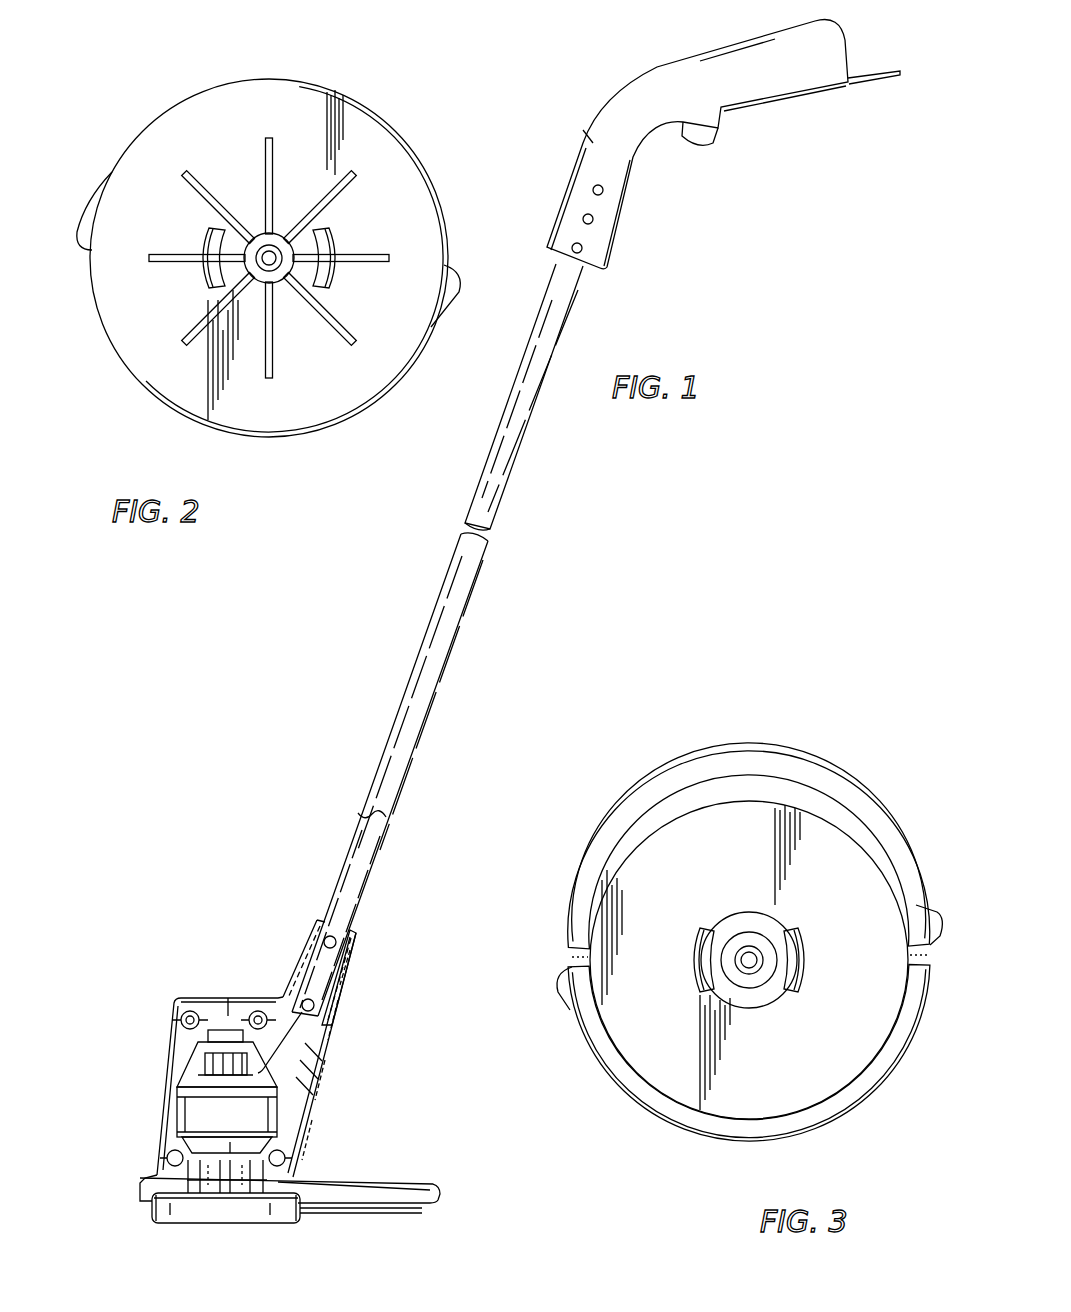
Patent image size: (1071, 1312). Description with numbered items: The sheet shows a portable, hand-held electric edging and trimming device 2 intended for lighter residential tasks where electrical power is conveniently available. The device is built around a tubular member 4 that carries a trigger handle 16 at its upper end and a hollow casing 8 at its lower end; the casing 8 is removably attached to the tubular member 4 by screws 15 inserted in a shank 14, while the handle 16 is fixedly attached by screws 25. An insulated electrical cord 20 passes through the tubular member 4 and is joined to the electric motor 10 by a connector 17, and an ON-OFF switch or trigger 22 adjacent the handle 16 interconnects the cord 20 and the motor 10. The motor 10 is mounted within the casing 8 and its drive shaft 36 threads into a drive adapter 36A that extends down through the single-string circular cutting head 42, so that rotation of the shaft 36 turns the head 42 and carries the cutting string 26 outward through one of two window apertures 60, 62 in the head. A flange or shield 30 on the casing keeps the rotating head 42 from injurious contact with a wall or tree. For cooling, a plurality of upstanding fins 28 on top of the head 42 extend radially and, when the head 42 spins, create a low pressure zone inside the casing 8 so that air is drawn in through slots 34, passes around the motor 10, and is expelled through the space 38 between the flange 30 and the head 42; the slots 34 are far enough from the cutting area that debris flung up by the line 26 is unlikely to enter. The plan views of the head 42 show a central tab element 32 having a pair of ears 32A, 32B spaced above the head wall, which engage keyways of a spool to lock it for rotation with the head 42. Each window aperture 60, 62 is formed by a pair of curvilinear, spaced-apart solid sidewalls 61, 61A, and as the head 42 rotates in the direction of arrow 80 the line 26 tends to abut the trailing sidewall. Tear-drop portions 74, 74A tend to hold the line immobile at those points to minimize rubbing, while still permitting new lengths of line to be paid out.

In FIG. 1, the edging and trimming device 2 is at (185, 918).
In FIG. 1, the tubular member 4 is at (427, 632).
In FIG. 1, the casing 8 is at (208, 998).
In FIG. 1, the electric motor 10 is at (185, 1110).
In FIG. 1, the shank 14 is at (303, 947).
In FIG. 1, the screws 15 is at (355, 937).
In FIG. 1, the trigger handle 16 is at (660, 66).
In FIG. 1, the connector 17 is at (293, 1033).
In FIG. 1, the electrical cord 20 is at (881, 78).
In FIG. 1, the ON-OFF switch or trigger 22 is at (715, 138).
In FIG. 1, the screws 25 is at (594, 220).
In FIG. 1, the cutting string 26 is at (394, 1214).
In FIG. 1, the upstanding fins 28 is at (232, 1180).
In FIG. 2, the upstanding fins 28 is at (260, 157).
In FIG. 1, the flange or shield 30 is at (385, 1184).
In FIG. 3, the tab element 32 is at (745, 912).
In FIG. 3, the ear 32A is at (812, 962).
In FIG. 3, the ear 32B is at (688, 968).
In FIG. 1, the slots 34 is at (328, 1067).
In FIG. 1, the drive shaft 36 is at (200, 1152).
In FIG. 2, the drive adapter 36A is at (276, 270).
In FIG. 1, the space 38 is at (146, 1191).
In FIG. 1, the cutting head 42 is at (165, 1210).
In FIG. 2, the cutting head 42 is at (160, 408).
In FIG. 3, the cutting head 42 is at (612, 1118).
In FIG. 3, the window aperture 60 is at (566, 958).
In FIG. 3, the sidewall 61 is at (770, 779).
In FIG. 3, the sidewall 61A is at (706, 1141).
In FIG. 3, the window aperture 62 is at (924, 963).
In FIG. 2, the tear-drop portion 74 is at (455, 277).
In FIG. 3, the tear-drop portion 74 is at (935, 922).
In FIG. 2, the tear-drop portion 74A is at (80, 247).
In FIG. 2, the arrow 80 is at (390, 90).
In FIG. 3, the arrow 80 is at (818, 761).